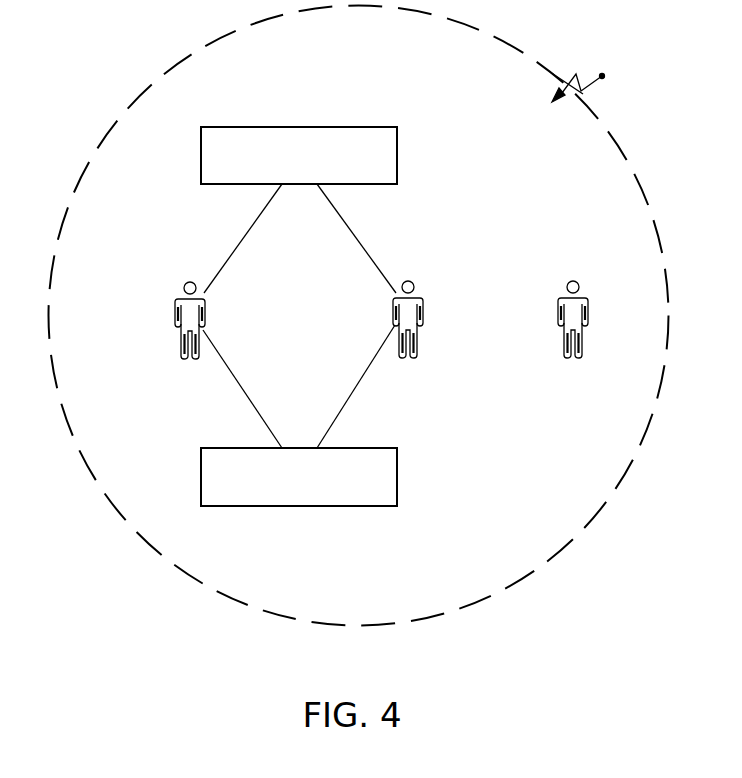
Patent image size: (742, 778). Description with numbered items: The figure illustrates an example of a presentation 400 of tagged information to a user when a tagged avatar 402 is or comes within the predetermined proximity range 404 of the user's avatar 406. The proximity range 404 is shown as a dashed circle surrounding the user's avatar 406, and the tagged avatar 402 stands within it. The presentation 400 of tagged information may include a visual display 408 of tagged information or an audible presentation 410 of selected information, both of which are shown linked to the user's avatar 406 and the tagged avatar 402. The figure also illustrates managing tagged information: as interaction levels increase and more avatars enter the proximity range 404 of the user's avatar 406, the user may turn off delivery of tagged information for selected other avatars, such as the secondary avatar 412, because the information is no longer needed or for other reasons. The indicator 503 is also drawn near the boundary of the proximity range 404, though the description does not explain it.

The presentation of tagged information 400 is at (343, 514).
The tagged avatar 402 is at (423, 312).
The predetermined proximity range 404 is at (652, 208).
The user's avatar 406 is at (176, 311).
The visual display 408 is at (397, 153).
The audible presentation 410 is at (397, 473).
The secondary avatar 412 is at (588, 312).
The direction/orientation indicator arrow 503 is at (597, 69).